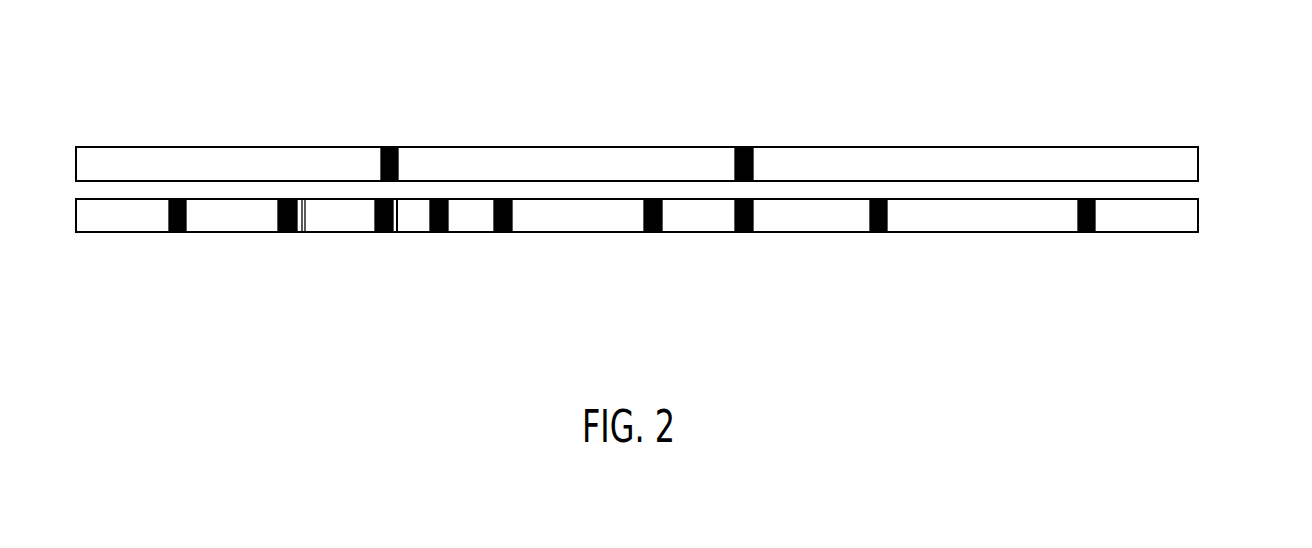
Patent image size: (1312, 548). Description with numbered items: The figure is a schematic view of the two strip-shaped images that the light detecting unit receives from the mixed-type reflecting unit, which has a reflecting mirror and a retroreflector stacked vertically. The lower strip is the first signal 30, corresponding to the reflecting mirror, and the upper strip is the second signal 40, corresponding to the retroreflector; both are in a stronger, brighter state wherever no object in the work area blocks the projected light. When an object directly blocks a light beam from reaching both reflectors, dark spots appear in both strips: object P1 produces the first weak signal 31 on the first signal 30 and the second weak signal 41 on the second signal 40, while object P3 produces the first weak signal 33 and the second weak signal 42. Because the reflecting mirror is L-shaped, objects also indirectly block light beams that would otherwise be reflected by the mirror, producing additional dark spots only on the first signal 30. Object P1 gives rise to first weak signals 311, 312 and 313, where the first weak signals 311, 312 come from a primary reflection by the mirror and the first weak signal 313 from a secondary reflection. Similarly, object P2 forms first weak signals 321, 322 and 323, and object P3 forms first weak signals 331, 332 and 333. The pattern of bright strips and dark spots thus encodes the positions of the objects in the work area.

The first signal 30 is at (1183, 209).
The first weak signal 31 is at (753, 214).
The first weak signal 311 is at (177, 232).
The first weak signal 312 is at (1083, 232).
The first weak signal 313 is at (448, 214).
The first weak signal 321 is at (270, 232).
The first weak signal 322 is at (887, 214).
The first weak signal 323 is at (367, 232).
The first weak signal 33 is at (403, 232).
The first weak signal 331 is at (310, 232).
The first weak signal 332 is at (662, 214).
The first weak signal 333 is at (512, 214).
The second signal 40 is at (1183, 160).
The second weak signal 41 is at (742, 148).
The second weak signal 42 is at (398, 165).